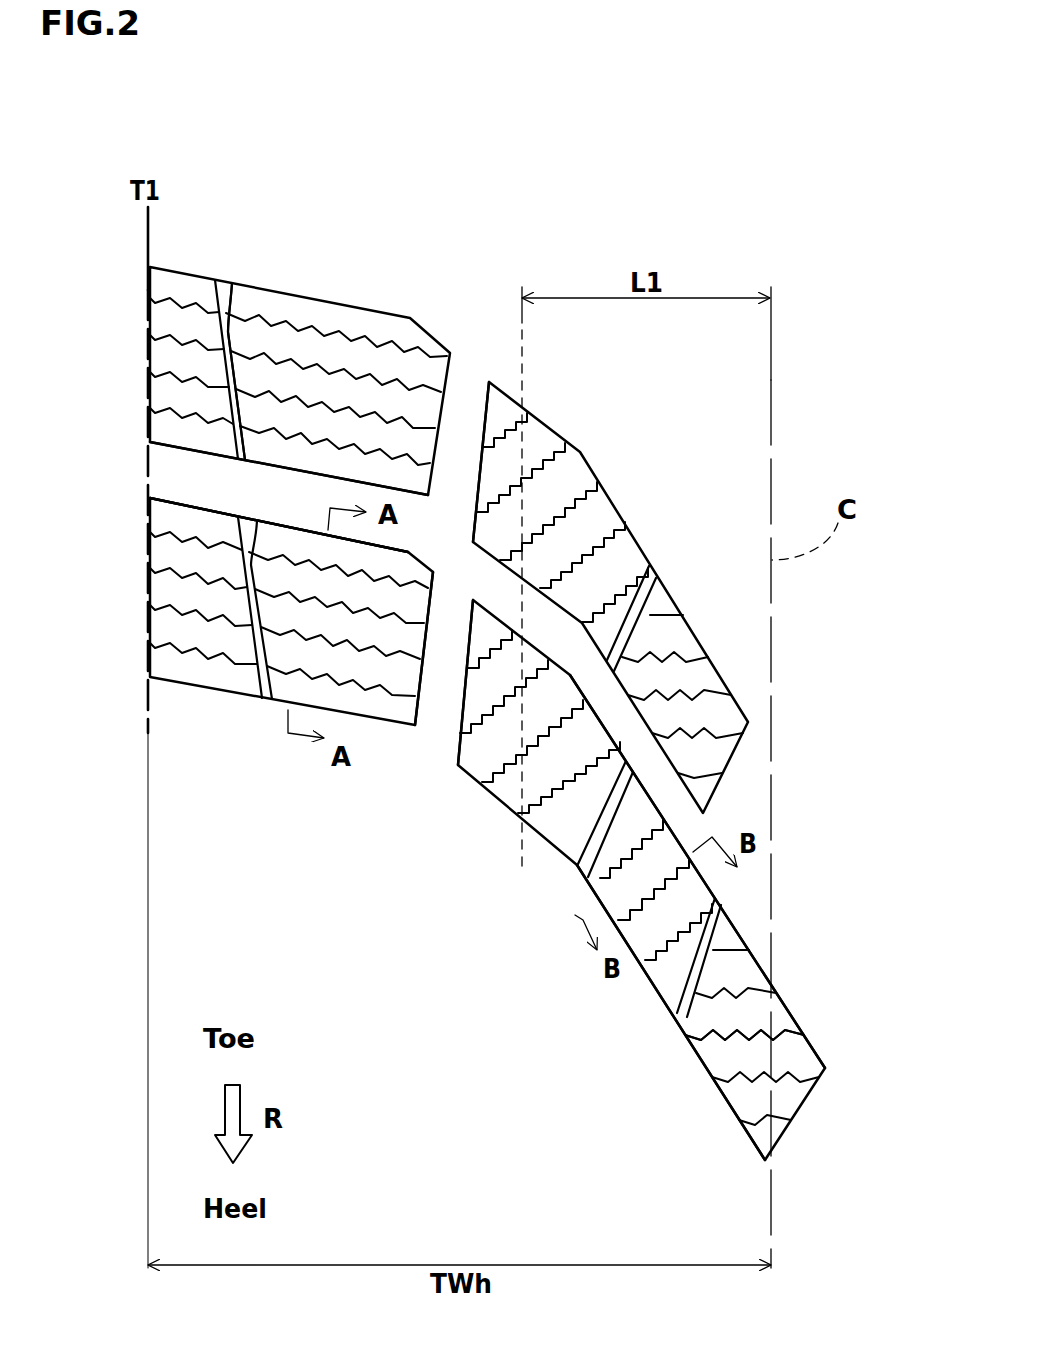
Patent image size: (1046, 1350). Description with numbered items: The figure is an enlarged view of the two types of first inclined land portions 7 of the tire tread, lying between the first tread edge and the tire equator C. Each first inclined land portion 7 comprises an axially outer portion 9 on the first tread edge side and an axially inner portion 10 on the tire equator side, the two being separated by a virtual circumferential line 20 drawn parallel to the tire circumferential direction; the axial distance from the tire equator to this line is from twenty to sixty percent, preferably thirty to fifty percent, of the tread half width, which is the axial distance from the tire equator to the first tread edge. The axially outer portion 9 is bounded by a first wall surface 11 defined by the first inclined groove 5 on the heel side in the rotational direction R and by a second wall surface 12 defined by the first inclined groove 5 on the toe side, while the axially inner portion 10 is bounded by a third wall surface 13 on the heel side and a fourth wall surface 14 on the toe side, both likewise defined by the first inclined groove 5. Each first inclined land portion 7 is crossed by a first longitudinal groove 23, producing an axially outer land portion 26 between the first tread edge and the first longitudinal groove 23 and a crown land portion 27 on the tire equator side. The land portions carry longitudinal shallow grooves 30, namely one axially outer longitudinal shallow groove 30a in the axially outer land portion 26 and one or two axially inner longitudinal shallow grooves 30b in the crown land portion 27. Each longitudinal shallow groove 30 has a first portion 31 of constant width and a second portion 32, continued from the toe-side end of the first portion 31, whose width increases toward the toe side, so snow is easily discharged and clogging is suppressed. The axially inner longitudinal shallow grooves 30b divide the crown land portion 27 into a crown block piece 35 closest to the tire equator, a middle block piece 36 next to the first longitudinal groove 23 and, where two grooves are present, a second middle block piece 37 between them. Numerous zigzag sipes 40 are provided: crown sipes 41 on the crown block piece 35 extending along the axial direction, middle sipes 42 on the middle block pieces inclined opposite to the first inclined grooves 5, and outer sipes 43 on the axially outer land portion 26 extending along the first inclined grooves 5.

The first inclined groove 5 is at (203, 478).
The first inclined land portion 7 is at (298, 312).
The axially outer portion 9 is at (190, 398).
The axially inner portion 10 is at (613, 565).
The first wall surface 11 is at (383, 725).
The second wall surface 12 is at (287, 520).
The third wall surface 13 is at (631, 950).
The fourth wall surface 14 is at (705, 878).
The virtual circumferential line 20 is at (521, 320).
The first longitudinal groove 23 is at (463, 430).
The axially outer land portion 26 is at (335, 395).
The crown land portion 27 is at (665, 638).
The longitudinal shallow groove 30 is at (76, 268).
The axially outer longitudinal shallow groove 30a is at (255, 612).
The axially inner longitudinal shallow groove 30b is at (640, 612).
The first portion 31 is at (232, 372).
The second portion 32 is at (222, 297).
The crown block piece 35 is at (690, 678).
The middle block piece 36 is at (573, 528).
The second middle block piece 37 is at (598, 880).
The sipe 40 is at (782, 1075).
The crown sipe 41 is at (740, 1037).
The middle sipe 42 is at (627, 873).
The outer sipe 43 is at (270, 322).